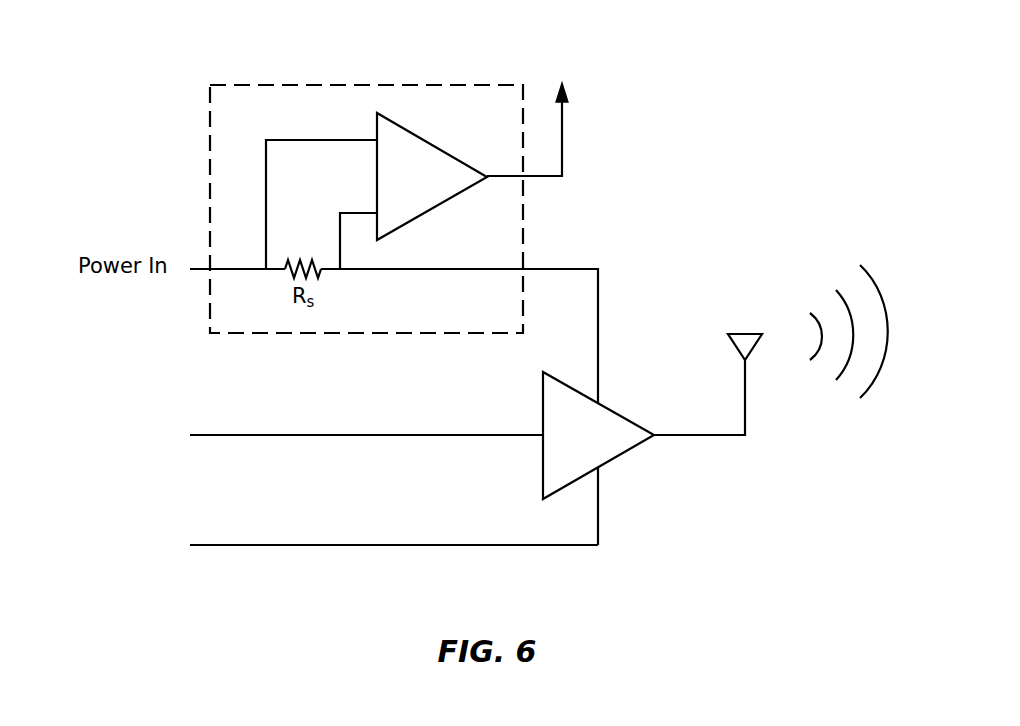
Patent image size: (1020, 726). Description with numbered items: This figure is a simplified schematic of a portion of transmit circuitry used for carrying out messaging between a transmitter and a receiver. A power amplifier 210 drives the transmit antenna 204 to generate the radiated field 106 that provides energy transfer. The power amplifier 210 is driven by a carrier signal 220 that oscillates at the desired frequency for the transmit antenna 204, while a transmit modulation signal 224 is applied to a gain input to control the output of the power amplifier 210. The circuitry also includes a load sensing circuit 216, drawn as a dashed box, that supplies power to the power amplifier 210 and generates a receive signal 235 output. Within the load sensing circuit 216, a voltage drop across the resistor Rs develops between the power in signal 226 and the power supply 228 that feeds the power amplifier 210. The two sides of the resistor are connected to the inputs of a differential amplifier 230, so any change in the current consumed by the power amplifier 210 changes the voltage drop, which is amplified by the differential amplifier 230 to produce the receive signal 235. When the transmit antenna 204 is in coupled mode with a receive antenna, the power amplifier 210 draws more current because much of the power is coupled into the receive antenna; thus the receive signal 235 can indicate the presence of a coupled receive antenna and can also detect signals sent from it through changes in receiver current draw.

The radiated field 106 is at (846, 250).
The transmit antenna 204 is at (728, 340).
The power amplifier 210 is at (620, 412).
The load sensing circuit 216 is at (340, 85).
The carrier signal 220 is at (248, 433).
The transmit modulation signal 224 is at (277, 543).
The power in signal 226 is at (258, 273).
The power supply 228 is at (397, 272).
The differential amplifier 230 is at (447, 200).
The receive signal 235 is at (562, 138).